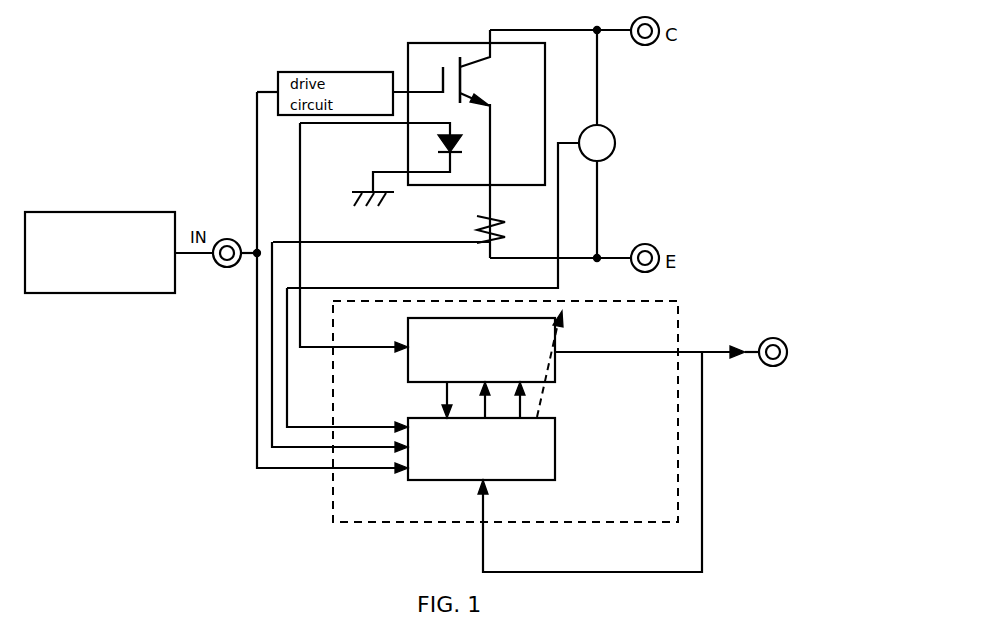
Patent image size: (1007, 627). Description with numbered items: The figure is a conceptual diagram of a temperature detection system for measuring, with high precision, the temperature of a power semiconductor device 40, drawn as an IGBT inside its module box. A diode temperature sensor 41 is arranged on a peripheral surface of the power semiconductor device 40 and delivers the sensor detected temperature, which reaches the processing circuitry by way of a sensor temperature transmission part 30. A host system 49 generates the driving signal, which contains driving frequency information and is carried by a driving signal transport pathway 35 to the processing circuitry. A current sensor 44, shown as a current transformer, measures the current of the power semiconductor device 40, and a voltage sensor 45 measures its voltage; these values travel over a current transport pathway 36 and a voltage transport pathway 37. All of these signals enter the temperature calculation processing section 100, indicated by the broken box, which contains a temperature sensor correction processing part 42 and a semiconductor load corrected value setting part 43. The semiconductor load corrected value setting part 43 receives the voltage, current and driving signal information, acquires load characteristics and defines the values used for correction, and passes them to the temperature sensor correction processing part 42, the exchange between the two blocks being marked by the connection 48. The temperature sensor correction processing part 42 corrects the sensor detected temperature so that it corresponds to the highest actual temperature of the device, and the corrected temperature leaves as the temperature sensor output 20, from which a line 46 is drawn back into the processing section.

The host system 49 is at (118, 212).
The sensor temperature transmission part 30 is at (300, 167).
The power semiconductor device 40 is at (443, 75).
The temperature sensor 41 is at (440, 151).
The current sensor 44 is at (488, 223).
The voltage sensor 45 is at (615, 143).
The voltage transport pathway 37 is at (287, 343).
The current transport pathway 36 is at (272, 370).
The driving signal transport pathway 35 is at (257, 397).
The signal from block 42 to block 43 48 is at (447, 388).
The temperature sensor correction processing part 42 is at (555, 362).
The semiconductor load corrected value setting part 43 is at (555, 462).
The temperature calculation processing section 100 is at (678, 313).
The temperature sensor output 20 is at (747, 354).
The feedback line 46 is at (702, 522).